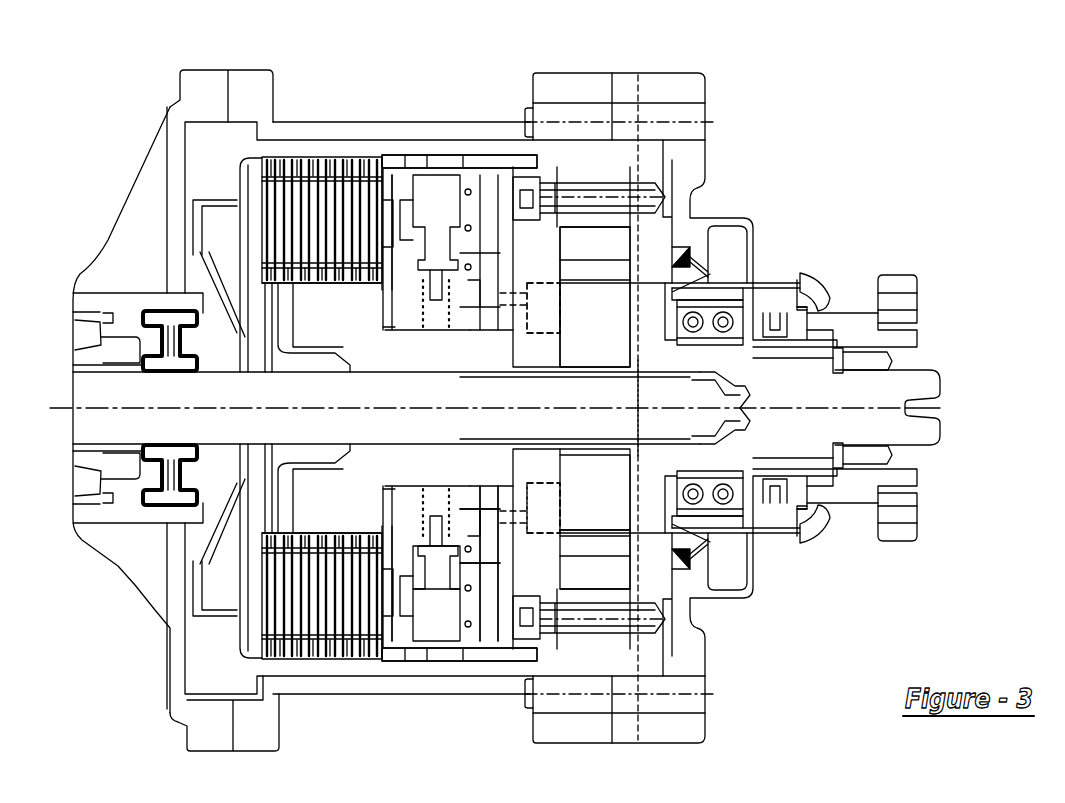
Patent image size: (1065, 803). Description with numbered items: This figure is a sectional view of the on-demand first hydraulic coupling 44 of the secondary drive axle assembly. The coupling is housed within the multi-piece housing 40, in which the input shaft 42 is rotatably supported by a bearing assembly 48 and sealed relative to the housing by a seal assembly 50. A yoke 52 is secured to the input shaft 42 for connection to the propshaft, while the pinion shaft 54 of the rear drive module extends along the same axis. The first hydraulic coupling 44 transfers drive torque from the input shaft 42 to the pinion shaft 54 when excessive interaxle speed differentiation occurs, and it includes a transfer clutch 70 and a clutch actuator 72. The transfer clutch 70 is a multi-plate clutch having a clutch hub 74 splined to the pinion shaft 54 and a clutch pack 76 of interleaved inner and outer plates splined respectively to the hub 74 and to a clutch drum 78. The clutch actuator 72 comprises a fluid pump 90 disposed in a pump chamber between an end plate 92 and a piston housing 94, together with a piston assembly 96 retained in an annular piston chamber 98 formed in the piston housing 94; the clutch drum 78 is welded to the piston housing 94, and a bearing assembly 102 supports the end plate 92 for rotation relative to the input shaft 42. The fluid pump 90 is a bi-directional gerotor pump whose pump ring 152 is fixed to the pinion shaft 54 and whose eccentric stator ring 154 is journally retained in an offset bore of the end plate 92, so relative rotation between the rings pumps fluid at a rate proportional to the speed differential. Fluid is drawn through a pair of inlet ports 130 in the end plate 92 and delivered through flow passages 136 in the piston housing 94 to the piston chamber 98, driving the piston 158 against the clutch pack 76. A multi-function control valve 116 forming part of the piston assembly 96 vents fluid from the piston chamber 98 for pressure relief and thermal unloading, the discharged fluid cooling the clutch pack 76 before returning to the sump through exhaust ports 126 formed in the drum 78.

The multi-piece housing 40 is at (252, 86).
The input shaft 42 is at (920, 378).
The first hydraulic coupling 44 is at (752, 112).
The bearing assembly 48 is at (722, 320).
The seal assembly 50 is at (797, 493).
The yoke 52 is at (905, 285).
The pinion shaft 54 is at (266, 398).
The transfer clutch 70 is at (325, 132).
The clutch actuator 72 is at (489, 160).
The clutch hub 74 is at (292, 315).
The clutch pack 76 is at (278, 618).
The clutch drum 78 is at (393, 662).
The fluid pump 90 is at (581, 353).
The end plate 92 is at (660, 216).
The piston housing 94 is at (531, 455).
The piston assembly 96 is at (437, 463).
The piston chamber 98 is at (492, 556).
The bearing assembly 102 is at (742, 378).
The control valve 116 is at (452, 641).
The exhaust ports 126 is at (428, 162).
The inlet ports 130 is at (641, 368).
The flow passages 136 is at (540, 290).
The pump ring 152 is at (622, 518).
The eccentric stator ring 154 is at (618, 571).
The piston 158 is at (482, 642).